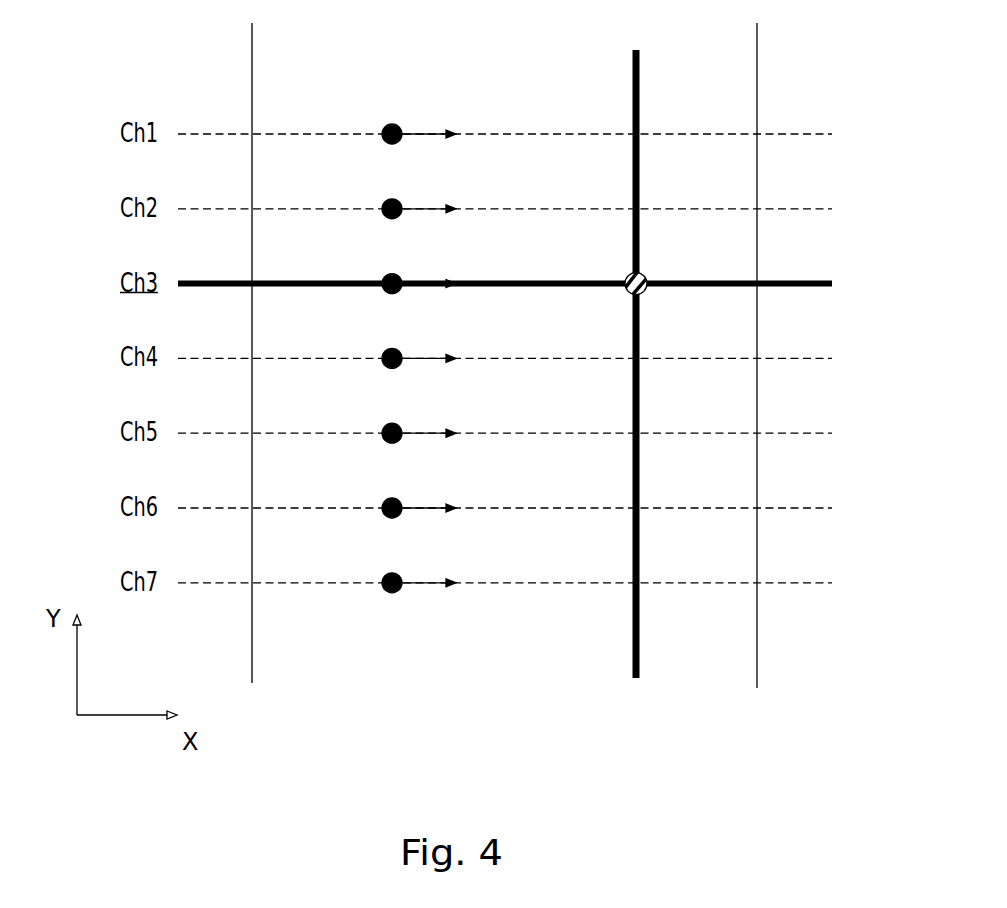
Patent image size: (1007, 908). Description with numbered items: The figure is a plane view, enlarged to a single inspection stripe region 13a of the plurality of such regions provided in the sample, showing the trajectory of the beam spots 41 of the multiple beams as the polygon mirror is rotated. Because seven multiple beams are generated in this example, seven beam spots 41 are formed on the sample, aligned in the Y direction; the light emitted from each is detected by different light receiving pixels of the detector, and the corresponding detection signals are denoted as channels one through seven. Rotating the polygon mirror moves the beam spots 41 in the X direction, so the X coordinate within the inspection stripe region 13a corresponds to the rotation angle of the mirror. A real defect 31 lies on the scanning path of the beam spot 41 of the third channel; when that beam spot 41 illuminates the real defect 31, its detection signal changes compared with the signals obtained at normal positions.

The inspection stripe region 13a is at (757, 41).
The real defect 31 is at (644, 273).
The beam spot 41 is at (394, 124).